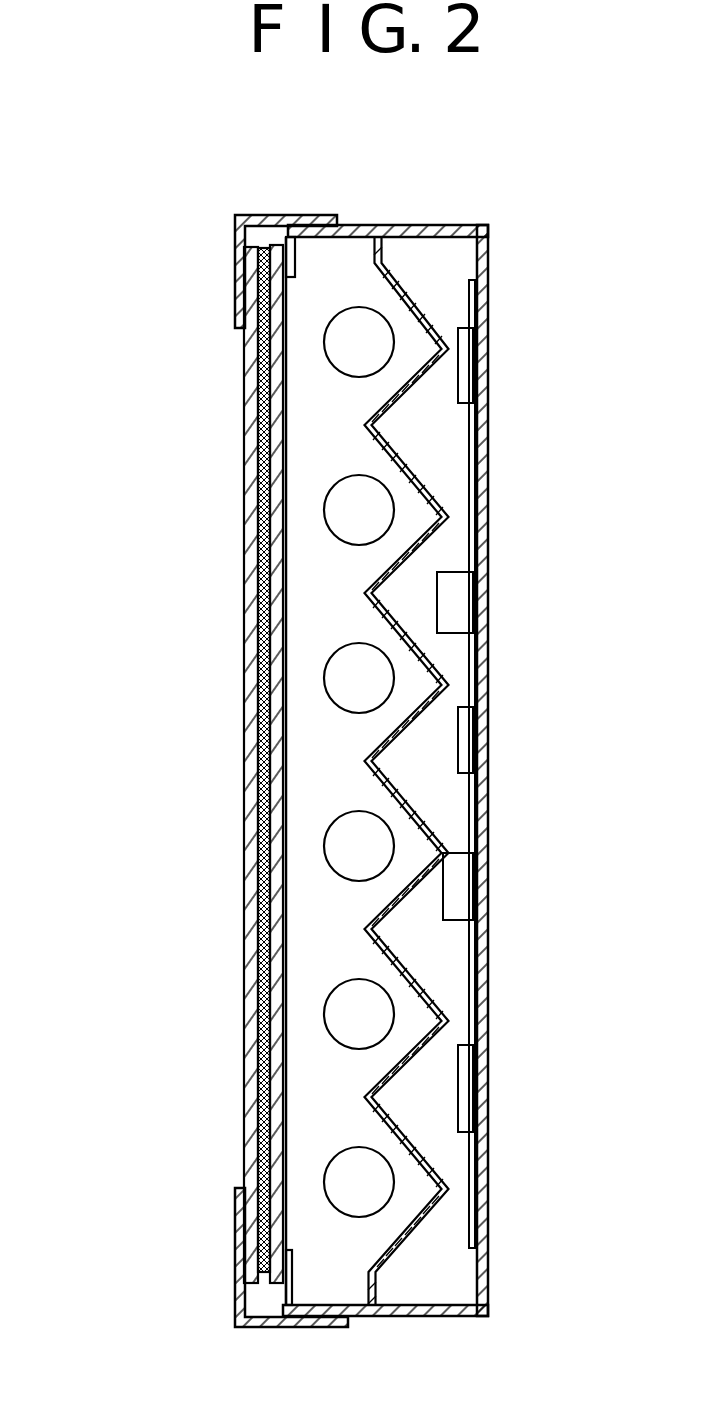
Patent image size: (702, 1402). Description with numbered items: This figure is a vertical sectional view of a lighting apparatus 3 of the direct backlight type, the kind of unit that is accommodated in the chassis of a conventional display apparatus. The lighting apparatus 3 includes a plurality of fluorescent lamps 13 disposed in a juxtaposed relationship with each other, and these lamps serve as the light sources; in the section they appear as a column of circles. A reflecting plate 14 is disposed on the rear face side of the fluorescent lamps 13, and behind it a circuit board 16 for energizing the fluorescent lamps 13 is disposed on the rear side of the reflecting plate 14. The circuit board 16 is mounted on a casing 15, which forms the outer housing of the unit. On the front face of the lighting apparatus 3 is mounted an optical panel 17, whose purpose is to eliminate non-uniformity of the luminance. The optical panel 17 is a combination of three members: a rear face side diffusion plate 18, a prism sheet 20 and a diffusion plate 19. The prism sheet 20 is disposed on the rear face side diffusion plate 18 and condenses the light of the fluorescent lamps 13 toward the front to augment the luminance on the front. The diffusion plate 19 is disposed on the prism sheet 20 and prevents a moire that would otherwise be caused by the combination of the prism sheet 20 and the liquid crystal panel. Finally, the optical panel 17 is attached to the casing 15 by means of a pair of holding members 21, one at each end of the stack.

The lighting apparatus 3 is at (174, 418).
The fluorescent lamps 13 is at (385, 672).
The reflecting plate 14 is at (437, 820).
The casing 15 is at (483, 484).
The circuit board 16 is at (472, 420).
The optical panel 17 is at (210, 851).
The rear face side diffusion plate 18 is at (275, 502).
The diffusion plate 19 is at (254, 655).
The prism sheet 20 is at (263, 1002).
The holding members 21 is at (236, 313).